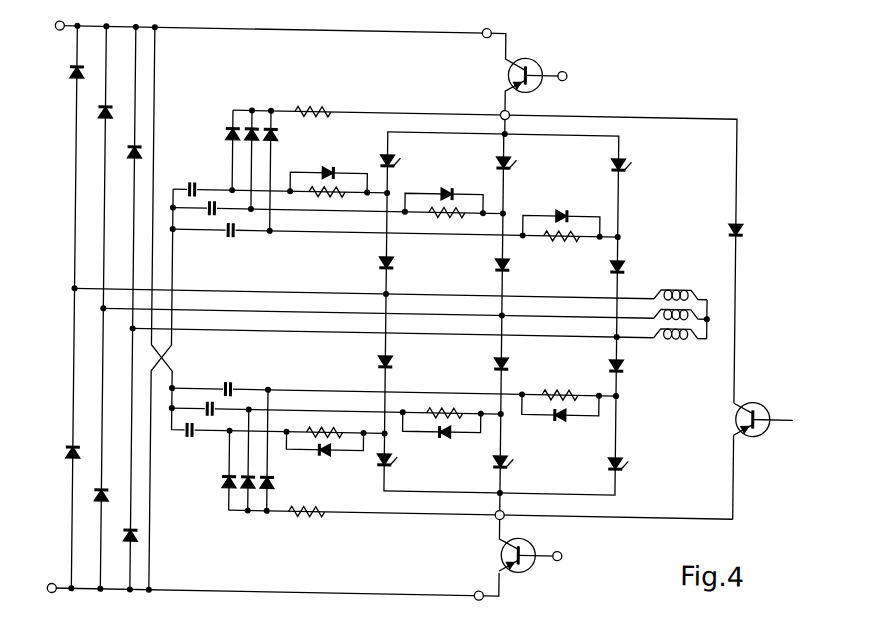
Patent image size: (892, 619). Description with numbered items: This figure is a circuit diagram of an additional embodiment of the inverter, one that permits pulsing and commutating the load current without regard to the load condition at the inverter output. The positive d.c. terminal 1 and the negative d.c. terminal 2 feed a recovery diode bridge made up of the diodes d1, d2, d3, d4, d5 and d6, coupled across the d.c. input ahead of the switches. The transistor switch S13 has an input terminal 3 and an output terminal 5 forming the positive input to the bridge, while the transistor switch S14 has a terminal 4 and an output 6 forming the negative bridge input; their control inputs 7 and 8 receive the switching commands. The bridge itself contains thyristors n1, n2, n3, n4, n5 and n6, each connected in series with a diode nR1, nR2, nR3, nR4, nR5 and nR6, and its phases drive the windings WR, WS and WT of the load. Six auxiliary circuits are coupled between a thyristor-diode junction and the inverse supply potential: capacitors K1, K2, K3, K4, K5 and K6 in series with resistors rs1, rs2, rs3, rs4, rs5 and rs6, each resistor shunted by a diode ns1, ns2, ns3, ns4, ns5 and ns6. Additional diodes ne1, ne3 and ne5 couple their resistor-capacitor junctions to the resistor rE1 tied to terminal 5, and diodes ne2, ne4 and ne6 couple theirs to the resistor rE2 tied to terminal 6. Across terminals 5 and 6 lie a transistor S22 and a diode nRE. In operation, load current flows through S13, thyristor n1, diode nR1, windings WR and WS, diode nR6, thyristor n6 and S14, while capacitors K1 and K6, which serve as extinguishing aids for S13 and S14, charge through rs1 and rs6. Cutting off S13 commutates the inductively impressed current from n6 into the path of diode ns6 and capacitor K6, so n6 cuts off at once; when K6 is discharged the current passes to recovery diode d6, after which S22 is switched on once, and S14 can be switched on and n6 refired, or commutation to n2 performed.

The positive d.c. terminal 1 is at (58, 38).
The negative d.c. terminal 2 is at (55, 590).
The input terminal of switch 3 is at (482, 38).
The terminal of switch 4 is at (480, 590).
The output terminal 5 is at (499, 110).
The output terminal 6 is at (498, 519).
The control input 7 is at (565, 74).
The control input 8 is at (565, 554).
The recovery diode d1 is at (69, 480).
The recovery diode d2 is at (129, 168).
The recovery diode d3 is at (100, 512).
The recovery diode d4 is at (70, 90).
The recovery diode d5 is at (129, 550).
The recovery diode d6 is at (100, 130).
The additional diode ne1 is at (225, 128).
The additional diode ne2 is at (272, 490).
The additional diode ne3 is at (251, 128).
The additional diode ne4 is at (227, 491).
The additional diode ne5 is at (273, 142).
The additional diode ne6 is at (249, 494).
The resistor rE1 is at (313, 109).
The resistor rE2 is at (311, 520).
The capacitor K1 is at (188, 188).
The capacitor K2 is at (243, 384).
The capacitor K3 is at (212, 206).
The capacitor K4 is at (186, 440).
The capacitor K5 is at (233, 240).
The capacitor K6 is at (214, 420).
The thyristor n1 is at (401, 155).
The thyristor n2 is at (630, 465).
The thyristor n3 is at (515, 160).
The thyristor n4 is at (399, 466).
The thyristor n5 is at (630, 159).
The thyristor n6 is at (515, 465).
The diode ns1 is at (324, 169).
The diode ns2 is at (565, 417).
The diode ns3 is at (443, 190).
The diode ns4 is at (332, 457).
The diode ns5 is at (559, 209).
The diode ns6 is at (449, 436).
The resistor rs1 is at (326, 200).
The resistor rs2 is at (565, 386).
The resistor rs3 is at (443, 218).
The resistor rs4 is at (322, 428).
The resistor rs5 is at (563, 240).
The resistor rs6 is at (445, 407).
The diode nR1 is at (393, 269).
The diode nR2 is at (624, 370).
The diode nR3 is at (509, 269).
The diode nR4 is at (393, 360).
The diode nR5 is at (624, 262).
The diode nR6 is at (509, 359).
The diode nRE is at (740, 230).
The winding WR is at (666, 285).
The winding WS is at (690, 318).
The winding WT is at (670, 340).
The transistor switch S13 is at (530, 58).
The transistor switch S14 is at (528, 570).
The transistor S22 is at (751, 397).